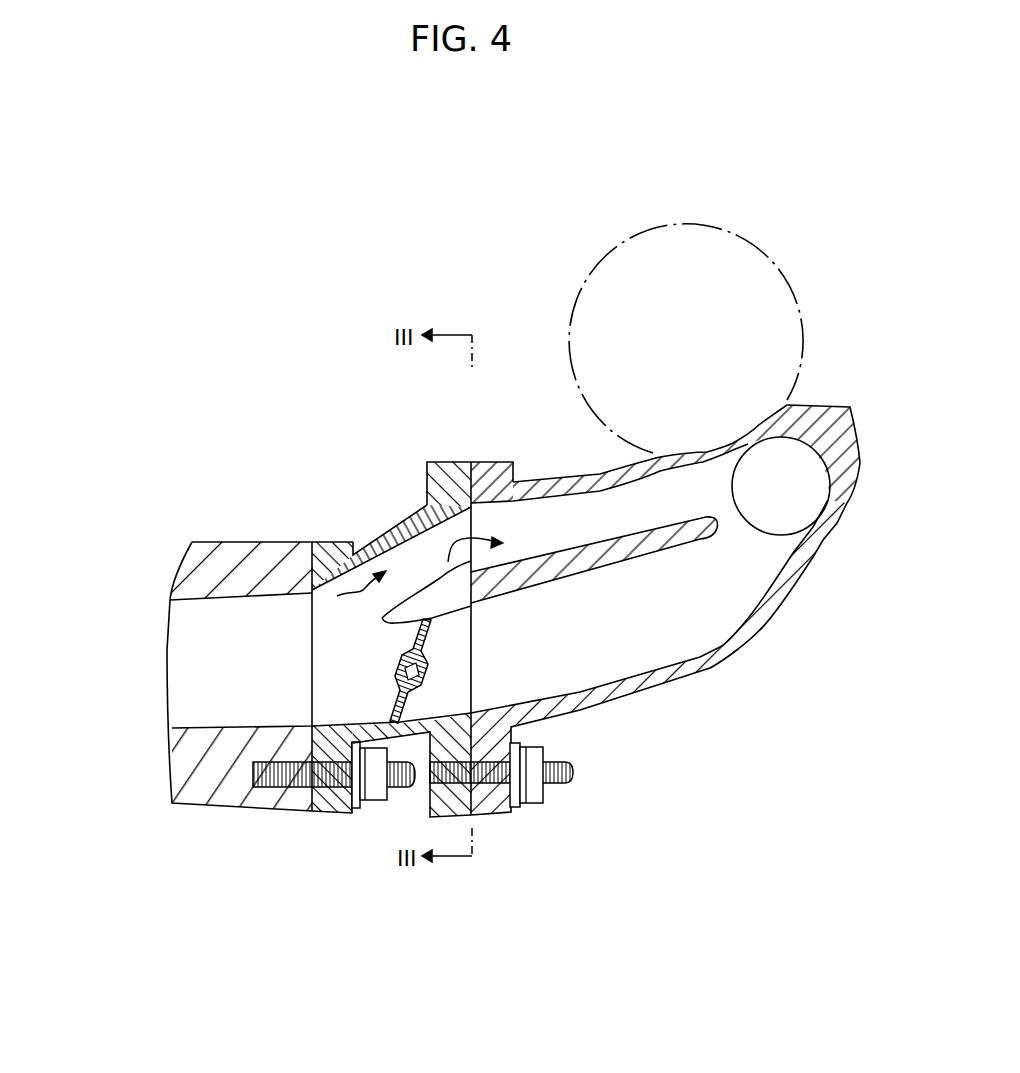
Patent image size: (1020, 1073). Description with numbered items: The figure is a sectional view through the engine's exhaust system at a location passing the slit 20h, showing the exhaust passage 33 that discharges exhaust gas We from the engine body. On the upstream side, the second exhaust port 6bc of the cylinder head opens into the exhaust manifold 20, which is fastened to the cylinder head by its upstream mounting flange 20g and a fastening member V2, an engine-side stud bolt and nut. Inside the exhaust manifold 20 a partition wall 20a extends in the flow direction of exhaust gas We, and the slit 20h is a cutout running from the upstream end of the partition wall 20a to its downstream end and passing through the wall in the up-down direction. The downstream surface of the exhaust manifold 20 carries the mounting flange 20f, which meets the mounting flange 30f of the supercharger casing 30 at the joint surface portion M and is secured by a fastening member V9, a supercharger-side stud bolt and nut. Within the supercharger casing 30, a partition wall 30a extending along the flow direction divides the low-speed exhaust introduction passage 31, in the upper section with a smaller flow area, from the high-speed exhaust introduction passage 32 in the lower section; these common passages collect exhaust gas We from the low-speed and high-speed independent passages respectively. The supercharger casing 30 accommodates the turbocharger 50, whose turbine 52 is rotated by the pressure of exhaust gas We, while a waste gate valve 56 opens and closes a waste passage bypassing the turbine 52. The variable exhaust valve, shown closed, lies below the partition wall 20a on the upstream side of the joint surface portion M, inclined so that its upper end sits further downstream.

The second exhaust port 6bc is at (203, 682).
The exhaust manifold 20 is at (431, 662).
The partition wall 20a is at (320, 515).
The mounting flange 20f is at (455, 462).
The mounting flange 20g is at (330, 808).
The slit 20h is at (451, 590).
The supercharger casing 30 is at (684, 591).
The partition wall 30a is at (567, 555).
The mounting flange 30f is at (490, 462).
The low-speed exhaust introduction passage 31 is at (543, 497).
The high-speed exhaust introduction passage 32 is at (675, 658).
The exhaust passage 33 is at (214, 562).
The turbocharger 50 is at (731, 318).
The turbine 52 is at (745, 252).
The waste gate valve 56 is at (787, 500).
The fastening member V2 is at (270, 785).
The fastening member V9 is at (572, 783).
The joint surface portion M is at (473, 815).
The exhaust gas We is at (429, 573).